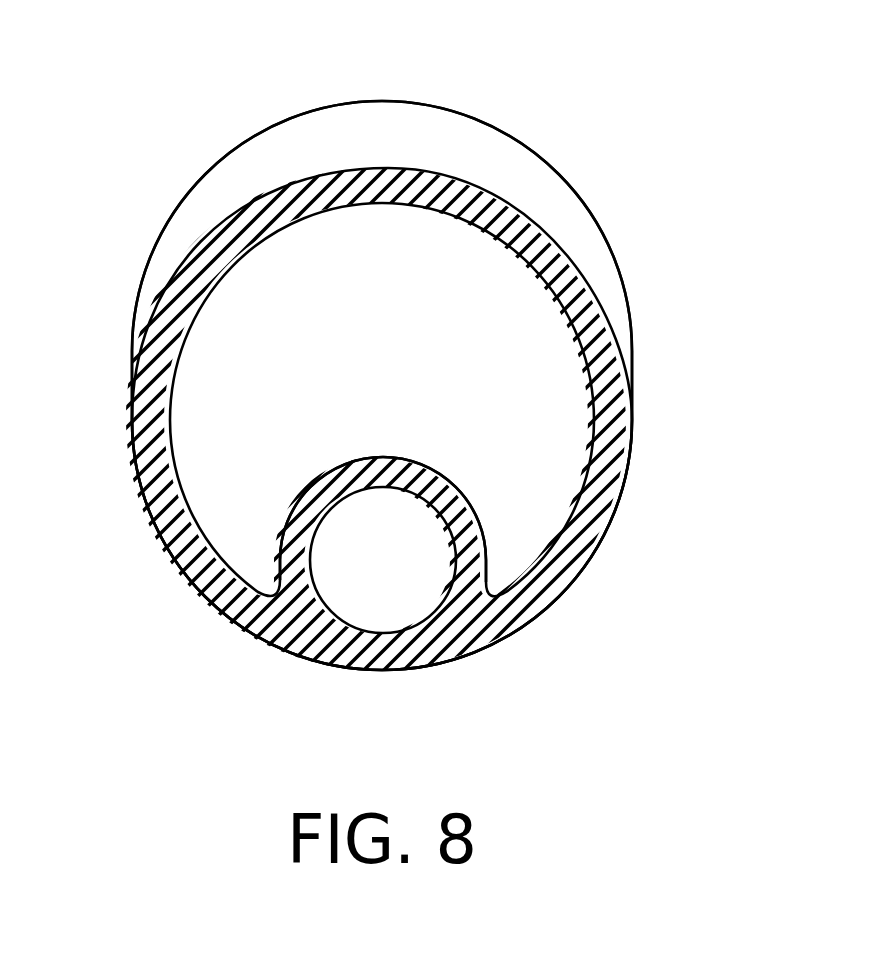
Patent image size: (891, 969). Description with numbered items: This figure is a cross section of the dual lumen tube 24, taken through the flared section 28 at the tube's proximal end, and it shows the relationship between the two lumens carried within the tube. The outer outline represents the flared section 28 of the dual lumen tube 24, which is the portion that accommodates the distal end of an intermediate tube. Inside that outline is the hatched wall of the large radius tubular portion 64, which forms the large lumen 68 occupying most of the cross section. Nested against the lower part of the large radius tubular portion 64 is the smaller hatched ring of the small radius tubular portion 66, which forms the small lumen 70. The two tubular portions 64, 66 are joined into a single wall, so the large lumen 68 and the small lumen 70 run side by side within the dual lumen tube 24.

The dual lumen tube 24 is at (594, 129).
The flared section 28 is at (382, 367).
The large radius tubular portion 64 is at (445, 400).
The small radius tubular portion 66 is at (465, 512).
The large lumen 68 is at (405, 363).
The small lumen 70 is at (405, 576).